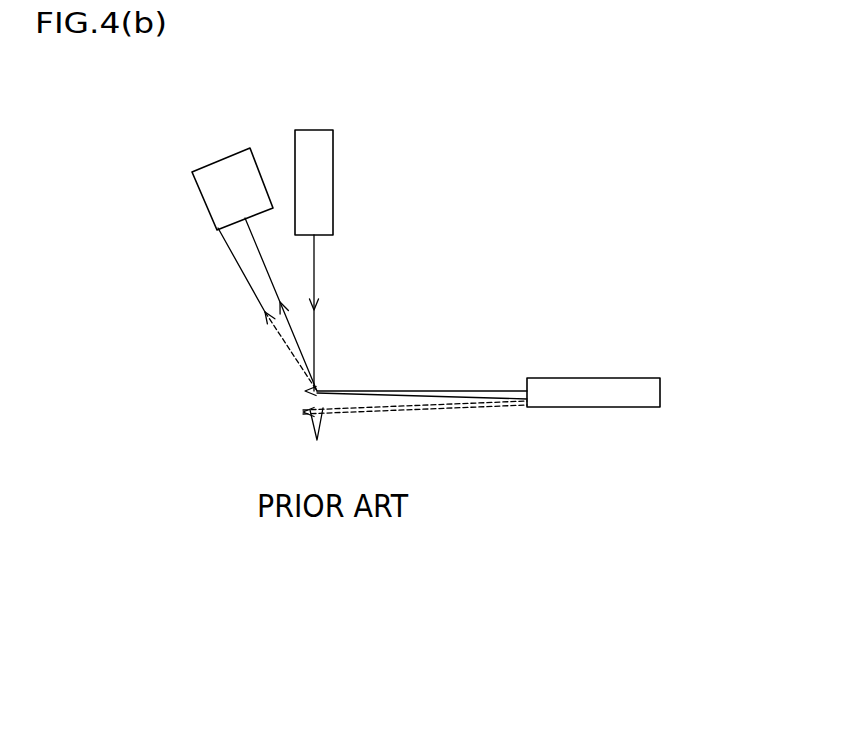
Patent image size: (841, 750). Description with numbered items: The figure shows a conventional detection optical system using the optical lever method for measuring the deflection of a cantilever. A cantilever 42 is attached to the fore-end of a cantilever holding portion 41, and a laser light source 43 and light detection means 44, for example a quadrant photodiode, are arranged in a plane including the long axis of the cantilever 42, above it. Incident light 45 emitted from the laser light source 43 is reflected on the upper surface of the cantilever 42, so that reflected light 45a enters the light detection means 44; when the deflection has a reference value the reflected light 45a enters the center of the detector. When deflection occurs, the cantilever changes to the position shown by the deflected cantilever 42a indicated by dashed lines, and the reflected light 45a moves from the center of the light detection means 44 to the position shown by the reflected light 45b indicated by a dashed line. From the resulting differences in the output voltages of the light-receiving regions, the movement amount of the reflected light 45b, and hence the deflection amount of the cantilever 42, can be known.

The cantilever holding portion 41 is at (620, 407).
The cantilever 42 is at (372, 389).
The deflected cantilever 42a is at (362, 412).
The laser light source 43 is at (333, 130).
The light detection means 44 is at (192, 172).
The incident light 45 is at (314, 280).
The reflected light 45a is at (260, 257).
The moved reflected light 45b is at (257, 293).